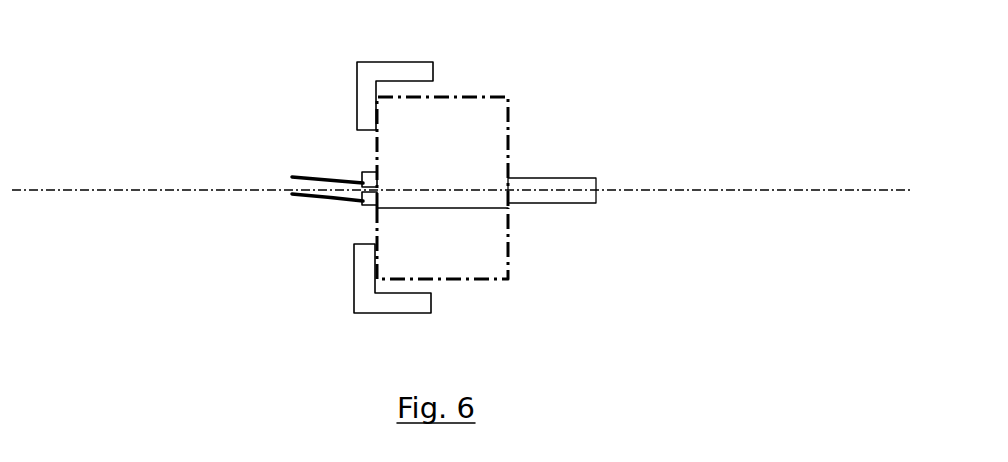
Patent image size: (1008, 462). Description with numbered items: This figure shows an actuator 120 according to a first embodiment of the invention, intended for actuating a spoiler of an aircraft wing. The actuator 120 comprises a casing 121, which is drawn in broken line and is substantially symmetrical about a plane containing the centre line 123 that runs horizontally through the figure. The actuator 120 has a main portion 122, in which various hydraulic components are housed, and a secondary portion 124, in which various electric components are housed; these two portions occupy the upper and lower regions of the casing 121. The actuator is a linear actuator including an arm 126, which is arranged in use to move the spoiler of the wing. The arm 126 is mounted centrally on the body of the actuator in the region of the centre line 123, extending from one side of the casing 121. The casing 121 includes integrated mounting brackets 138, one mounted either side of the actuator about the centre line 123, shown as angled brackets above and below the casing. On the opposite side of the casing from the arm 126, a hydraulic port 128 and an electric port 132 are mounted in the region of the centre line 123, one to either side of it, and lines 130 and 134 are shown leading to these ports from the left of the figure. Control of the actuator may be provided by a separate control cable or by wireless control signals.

The actuator 120 is at (236, 124).
The casing 121 is at (476, 189).
The main portion 122 is at (481, 125).
The centre line 123 is at (120, 190).
The secondary portion 124 is at (480, 258).
The arm 126 is at (591, 183).
The hydraulic port 128 is at (370, 208).
The lower lead wire 130 is at (305, 207).
The electric port 132 is at (370, 173).
The upper lead wire 134 is at (310, 173).
The mounting brackets 138 is at (413, 62).